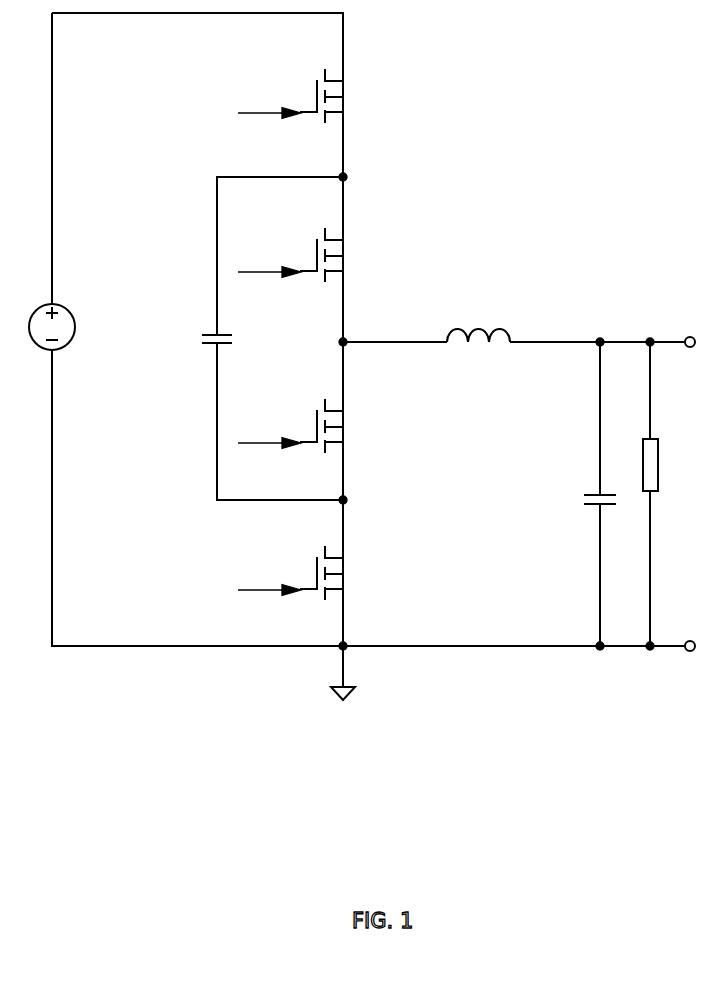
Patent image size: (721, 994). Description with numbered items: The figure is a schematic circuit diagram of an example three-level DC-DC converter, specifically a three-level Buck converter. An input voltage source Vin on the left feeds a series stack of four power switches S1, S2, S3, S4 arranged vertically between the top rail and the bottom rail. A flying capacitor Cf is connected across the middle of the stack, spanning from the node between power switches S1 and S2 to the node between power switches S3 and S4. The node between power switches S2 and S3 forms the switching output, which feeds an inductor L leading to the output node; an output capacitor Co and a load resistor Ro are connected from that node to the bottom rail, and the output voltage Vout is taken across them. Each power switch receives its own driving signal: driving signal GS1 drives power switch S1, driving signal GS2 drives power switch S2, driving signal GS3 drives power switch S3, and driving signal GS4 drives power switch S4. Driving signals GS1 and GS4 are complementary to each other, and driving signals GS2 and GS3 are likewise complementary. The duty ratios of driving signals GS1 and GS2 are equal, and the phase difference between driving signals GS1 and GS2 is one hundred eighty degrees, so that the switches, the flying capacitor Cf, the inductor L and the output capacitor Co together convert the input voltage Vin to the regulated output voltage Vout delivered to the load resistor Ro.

The power switch S1 is at (339, 96).
The power switch S2 is at (337, 255).
The power switch S3 is at (339, 426).
The power switch S4 is at (342, 573).
The driving signal GS1 is at (262, 102).
The driving signal GS2 is at (266, 261).
The driving signal GS3 is at (266, 434).
The driving signal GS4 is at (265, 577).
The input voltage source Vin is at (77, 327).
The flying capacitor Cf is at (199, 330).
The output capacitor Co is at (582, 499).
The inductor L is at (478, 318).
The load resistor Ro is at (667, 465).
The output voltage terminal Vout is at (674, 327).